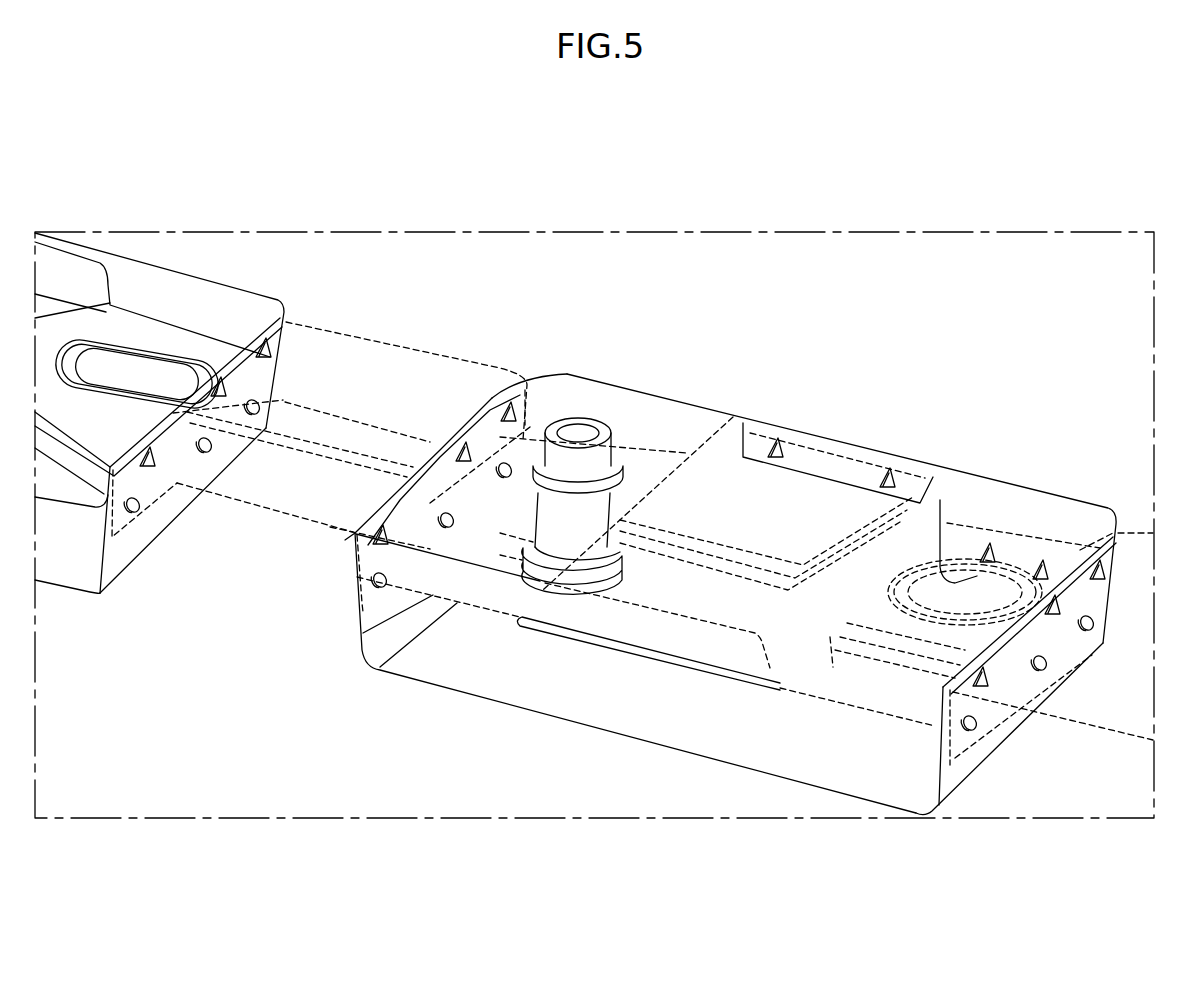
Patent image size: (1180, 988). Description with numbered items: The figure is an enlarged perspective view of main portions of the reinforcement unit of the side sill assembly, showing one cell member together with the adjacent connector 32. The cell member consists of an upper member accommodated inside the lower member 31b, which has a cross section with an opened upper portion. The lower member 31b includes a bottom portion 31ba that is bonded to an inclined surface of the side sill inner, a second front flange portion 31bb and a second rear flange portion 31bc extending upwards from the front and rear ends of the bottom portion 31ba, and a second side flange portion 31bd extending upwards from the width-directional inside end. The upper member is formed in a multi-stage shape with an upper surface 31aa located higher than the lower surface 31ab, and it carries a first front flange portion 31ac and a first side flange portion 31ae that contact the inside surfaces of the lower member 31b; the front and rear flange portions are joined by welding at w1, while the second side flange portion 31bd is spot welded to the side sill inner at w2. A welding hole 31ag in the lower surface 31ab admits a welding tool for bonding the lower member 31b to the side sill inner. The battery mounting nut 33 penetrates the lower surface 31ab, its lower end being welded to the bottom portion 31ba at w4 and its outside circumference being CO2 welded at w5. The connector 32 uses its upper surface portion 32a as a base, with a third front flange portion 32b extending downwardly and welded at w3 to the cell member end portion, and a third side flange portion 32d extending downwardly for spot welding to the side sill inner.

The lower member 31b is at (681, 757).
The bottom portion 31ba is at (613, 722).
The second front flange portion 31bb is at (370, 633).
The second rear flange portion 31bc is at (967, 760).
The second side flange portion 31bd is at (615, 395).
The lower surface 31ab is at (478, 510).
The first front flange portion 31ac is at (490, 432).
The upper surface 31aa is at (848, 490).
The first side flange portion 31ae is at (820, 457).
The welding hole 31ag is at (945, 527).
The connector 32 is at (383, 322).
The upper surface portion 32a is at (245, 487).
The third front flange portion 32b is at (150, 490).
The third side flange portion 32d is at (353, 342).
The battery mounting nut 33 is at (563, 420).
The welding portion w1 is at (524, 425).
The spot welding portion w2 is at (772, 440).
The welding portion w3 is at (372, 592).
The welding portion w4 is at (150, 490).
The CO2 welding portion w5 is at (628, 447).